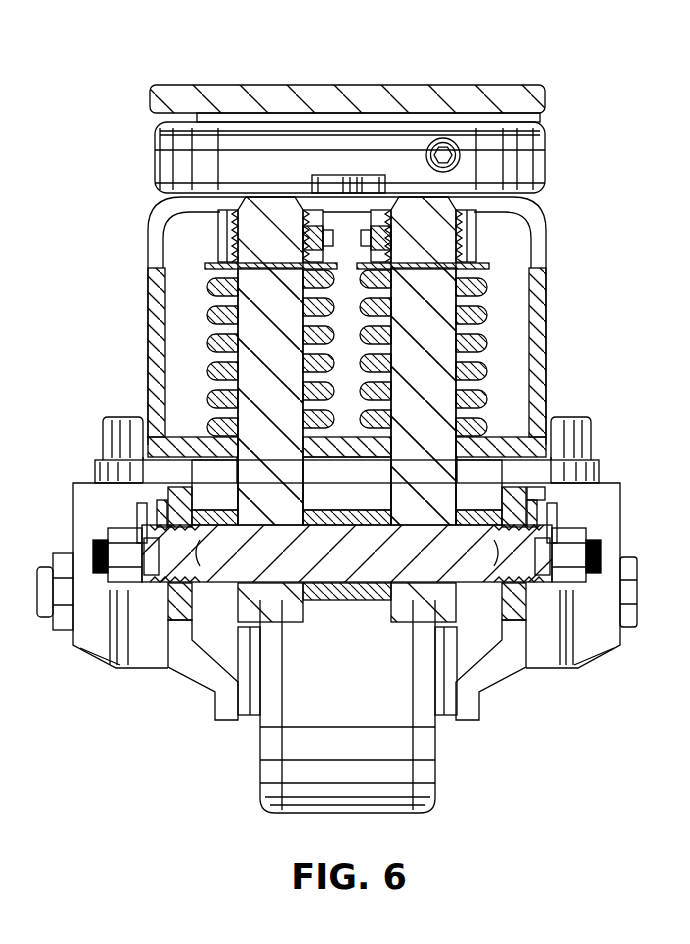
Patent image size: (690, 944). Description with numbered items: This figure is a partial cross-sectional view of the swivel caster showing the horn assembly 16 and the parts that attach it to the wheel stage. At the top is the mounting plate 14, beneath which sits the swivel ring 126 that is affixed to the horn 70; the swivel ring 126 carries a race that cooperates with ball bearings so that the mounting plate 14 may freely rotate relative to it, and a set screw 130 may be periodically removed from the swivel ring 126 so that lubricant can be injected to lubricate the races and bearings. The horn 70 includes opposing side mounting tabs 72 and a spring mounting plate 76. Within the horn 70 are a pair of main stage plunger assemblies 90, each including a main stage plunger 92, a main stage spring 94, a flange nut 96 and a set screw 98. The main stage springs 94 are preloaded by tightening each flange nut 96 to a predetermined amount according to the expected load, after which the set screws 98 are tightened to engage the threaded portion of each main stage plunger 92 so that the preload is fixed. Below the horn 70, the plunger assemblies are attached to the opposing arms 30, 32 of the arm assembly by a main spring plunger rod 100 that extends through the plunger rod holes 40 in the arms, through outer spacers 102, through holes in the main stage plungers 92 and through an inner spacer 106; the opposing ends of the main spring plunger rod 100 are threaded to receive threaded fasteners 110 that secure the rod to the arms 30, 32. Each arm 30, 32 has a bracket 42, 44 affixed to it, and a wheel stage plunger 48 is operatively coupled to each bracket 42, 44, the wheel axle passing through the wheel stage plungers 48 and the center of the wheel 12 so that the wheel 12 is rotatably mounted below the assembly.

The wheel 12 is at (358, 712).
The mounting plate 14 is at (503, 85).
The horn assembly 16 is at (614, 252).
The arm 30 is at (173, 478).
The arm 32 is at (522, 488).
The plunger rod hole 40 is at (152, 565).
The bracket 42 is at (616, 540).
The bracket 44 is at (78, 540).
The wheel stage plunger 48 is at (103, 432).
The horn 70 is at (554, 247).
The side mounting tabs 72 is at (148, 312).
The spring mounting plate 76 is at (185, 442).
The main stage plunger assembly 90 is at (268, 190).
The main stage plunger 92 is at (255, 332).
The main stage spring 94 is at (215, 290).
The flange nut 96 is at (230, 237).
The set screw 98 is at (476, 240).
The main spring plunger rod 100 is at (330, 570).
The outer spacer 102 is at (195, 603).
The inner spacer 106 is at (357, 592).
The threaded fastener 110 is at (133, 537).
The swivel ring 126 is at (545, 160).
The set screw 130 is at (442, 138).